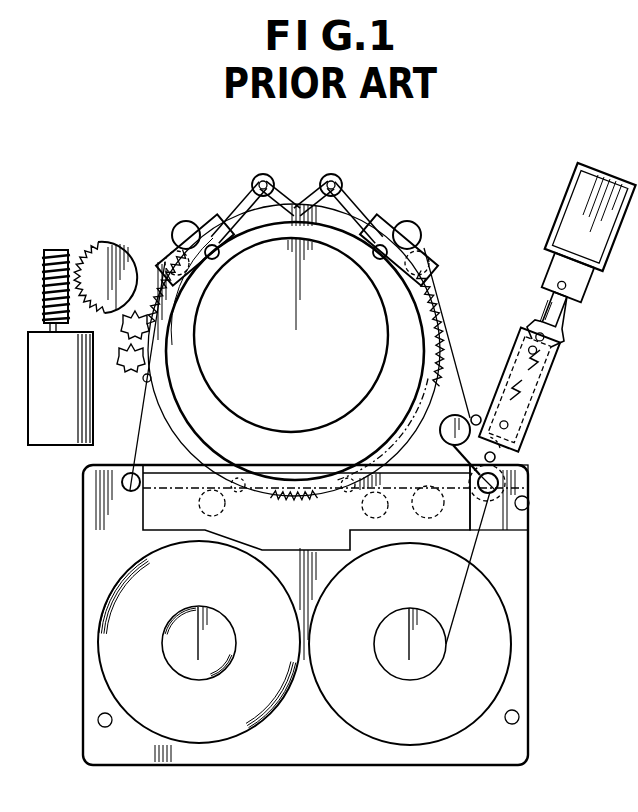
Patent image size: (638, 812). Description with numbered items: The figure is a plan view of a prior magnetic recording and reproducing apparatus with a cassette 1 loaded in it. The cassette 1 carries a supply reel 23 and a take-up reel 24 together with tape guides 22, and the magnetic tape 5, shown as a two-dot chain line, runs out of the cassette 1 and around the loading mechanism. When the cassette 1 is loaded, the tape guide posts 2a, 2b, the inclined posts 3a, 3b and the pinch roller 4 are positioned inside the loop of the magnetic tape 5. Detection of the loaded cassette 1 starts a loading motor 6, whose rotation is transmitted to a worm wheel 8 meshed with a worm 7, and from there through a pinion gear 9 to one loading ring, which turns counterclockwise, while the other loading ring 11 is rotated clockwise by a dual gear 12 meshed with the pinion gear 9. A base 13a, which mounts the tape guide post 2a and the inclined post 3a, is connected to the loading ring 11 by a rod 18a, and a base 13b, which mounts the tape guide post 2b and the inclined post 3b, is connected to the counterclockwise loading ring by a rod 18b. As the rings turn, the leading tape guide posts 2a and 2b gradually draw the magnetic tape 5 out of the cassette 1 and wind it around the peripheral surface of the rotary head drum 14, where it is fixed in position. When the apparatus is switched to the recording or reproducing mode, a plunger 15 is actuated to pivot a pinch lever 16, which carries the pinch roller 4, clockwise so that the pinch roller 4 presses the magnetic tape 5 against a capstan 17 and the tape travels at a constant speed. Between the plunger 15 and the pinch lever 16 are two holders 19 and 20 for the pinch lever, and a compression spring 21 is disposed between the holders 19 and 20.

The cassette 1 is at (522, 733).
The tape guide post 2a is at (182, 227).
The tape guide post 2b is at (407, 221).
The inclined post 3a is at (221, 260).
The inclined post 3b is at (372, 256).
The pinch roller 4 is at (450, 442).
The magnetic tape 5 is at (433, 270).
The loading motor 6 is at (30, 407).
The worm 7 is at (43, 292).
The worm wheel 8 is at (92, 256).
The pinion gear 9 is at (124, 333).
The loading ring 11 is at (422, 410).
The dual gear 12 is at (121, 374).
The base 13a is at (215, 222).
The base 13b is at (417, 257).
The rotary head drum 14 is at (368, 344).
The plunger 15 is at (575, 228).
The pinch lever 16 is at (520, 473).
The capstan 17 is at (475, 414).
The rod 18a is at (246, 192).
The rod 18b is at (357, 193).
The holder 19 is at (550, 327).
The holder 20 is at (518, 448).
The compression spring 21 is at (552, 366).
The tape guide 22 is at (122, 483).
The supply reel 23 is at (212, 728).
The take-up reel 24 is at (403, 722).